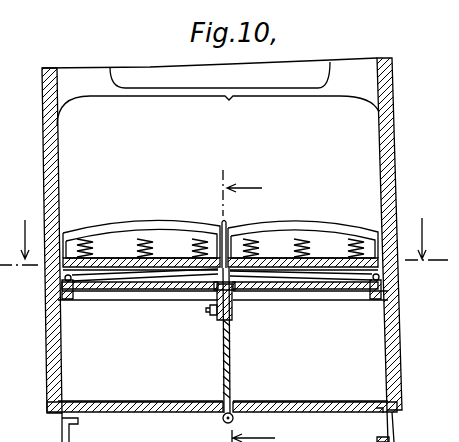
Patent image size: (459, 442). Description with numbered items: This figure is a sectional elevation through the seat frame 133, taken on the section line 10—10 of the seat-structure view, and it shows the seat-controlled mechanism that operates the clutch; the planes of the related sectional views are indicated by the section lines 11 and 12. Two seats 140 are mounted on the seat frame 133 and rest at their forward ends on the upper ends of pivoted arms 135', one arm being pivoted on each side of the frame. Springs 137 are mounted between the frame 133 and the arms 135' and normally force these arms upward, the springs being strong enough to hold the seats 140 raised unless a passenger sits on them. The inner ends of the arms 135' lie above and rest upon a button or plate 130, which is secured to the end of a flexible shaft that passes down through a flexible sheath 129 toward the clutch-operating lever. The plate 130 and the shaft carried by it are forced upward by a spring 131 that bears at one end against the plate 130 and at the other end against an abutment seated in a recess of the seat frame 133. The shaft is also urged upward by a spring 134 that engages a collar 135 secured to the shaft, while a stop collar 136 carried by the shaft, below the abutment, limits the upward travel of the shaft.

The section line 10— 10 is at (222, 221).
The section line 11— 11 is at (224, 241).
The section line 12— 12 is at (249, 306).
The flexible sheath 129 is at (223, 377).
The button or plate 130 is at (222, 224).
The spring 131 is at (235, 272).
The seat frame 133 is at (114, 300).
The spring 134 is at (233, 305).
The collar 135 is at (207, 326).
The pivoted arm 135' is at (220, 310).
The stop collar 136 is at (109, 290).
The spring 137 is at (177, 291).
The seat 140 is at (143, 220).